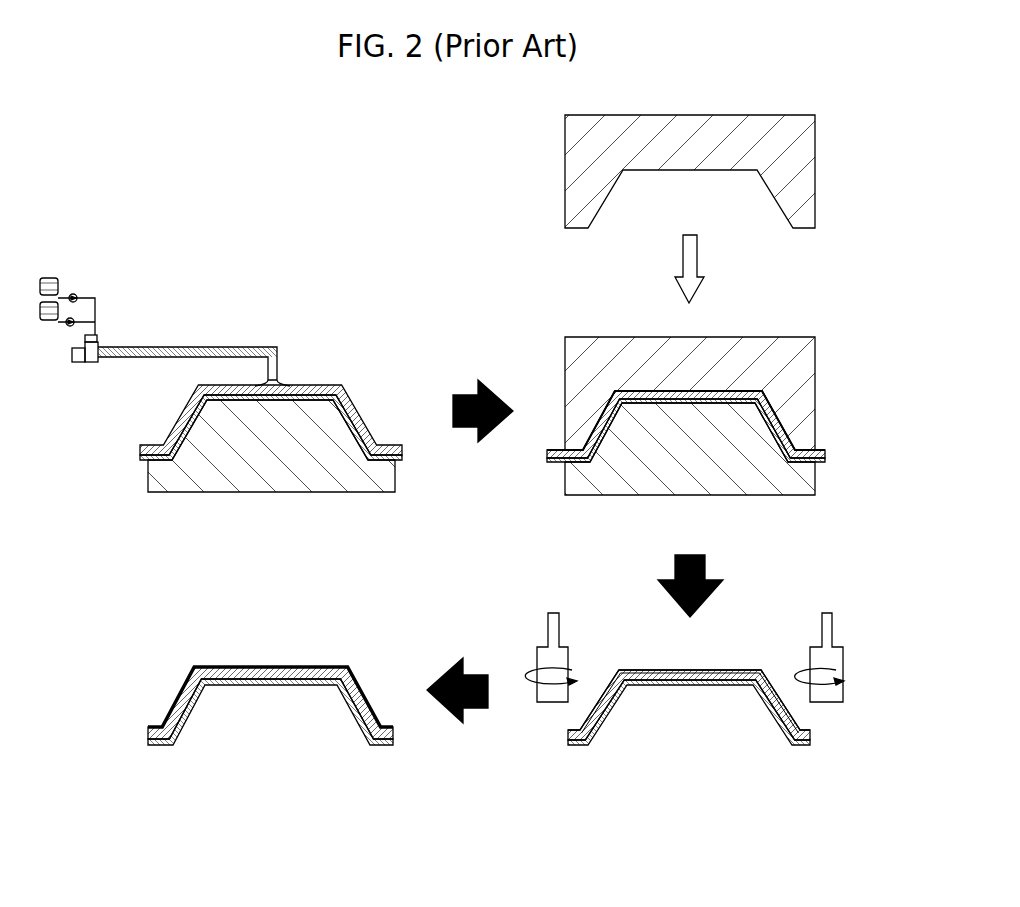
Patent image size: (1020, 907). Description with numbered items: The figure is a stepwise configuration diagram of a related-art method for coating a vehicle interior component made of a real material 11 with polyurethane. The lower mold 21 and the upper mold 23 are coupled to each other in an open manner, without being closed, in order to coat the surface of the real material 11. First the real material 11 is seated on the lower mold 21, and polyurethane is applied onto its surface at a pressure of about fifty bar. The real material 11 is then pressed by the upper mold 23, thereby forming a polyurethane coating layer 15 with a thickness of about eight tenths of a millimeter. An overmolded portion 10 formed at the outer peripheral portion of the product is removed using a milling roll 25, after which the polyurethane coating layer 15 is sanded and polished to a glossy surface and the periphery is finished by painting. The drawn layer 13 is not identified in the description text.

The overmolded portion 10 is at (833, 448).
The real material 11 is at (398, 446).
The backing layer 13 is at (402, 459).
The polyurethane coating layer 15 is at (818, 448).
The lower mold 21 is at (374, 492).
The upper mold 23 is at (808, 182).
The milling roll 25 is at (843, 670).